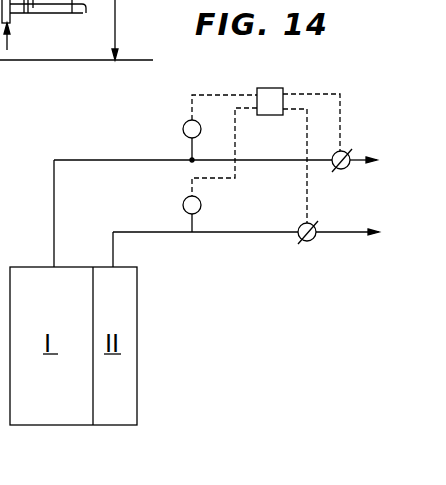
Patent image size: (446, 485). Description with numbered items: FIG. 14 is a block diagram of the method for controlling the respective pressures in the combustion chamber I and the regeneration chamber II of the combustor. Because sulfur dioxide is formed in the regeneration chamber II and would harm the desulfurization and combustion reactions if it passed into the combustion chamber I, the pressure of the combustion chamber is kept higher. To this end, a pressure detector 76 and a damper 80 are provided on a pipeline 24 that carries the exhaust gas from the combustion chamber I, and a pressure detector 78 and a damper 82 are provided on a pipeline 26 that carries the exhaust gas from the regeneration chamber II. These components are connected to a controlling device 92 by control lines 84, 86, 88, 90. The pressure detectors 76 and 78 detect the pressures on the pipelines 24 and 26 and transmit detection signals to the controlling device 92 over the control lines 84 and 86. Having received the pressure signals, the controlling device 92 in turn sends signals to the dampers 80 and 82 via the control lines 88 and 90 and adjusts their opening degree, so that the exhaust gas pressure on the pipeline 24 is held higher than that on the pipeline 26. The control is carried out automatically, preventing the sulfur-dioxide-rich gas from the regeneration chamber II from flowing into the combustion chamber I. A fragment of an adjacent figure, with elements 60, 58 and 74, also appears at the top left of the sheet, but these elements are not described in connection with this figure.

The pipeline 24 is at (53, 227).
The pipeline 26 is at (113, 242).
The pressure detector 76 is at (186, 123).
The pressure detector 78 is at (185, 203).
The damper 80 is at (348, 150).
The damper 82 is at (303, 223).
The control line 84 is at (205, 95).
The control line 86 is at (233, 128).
The control line 88 is at (302, 94).
The control line 90 is at (305, 137).
The controlling device 92 is at (272, 88).
The nozzle 60 is at (30, 12).
The housing 58 is at (68, 13).
The base plate 74 is at (32, 62).